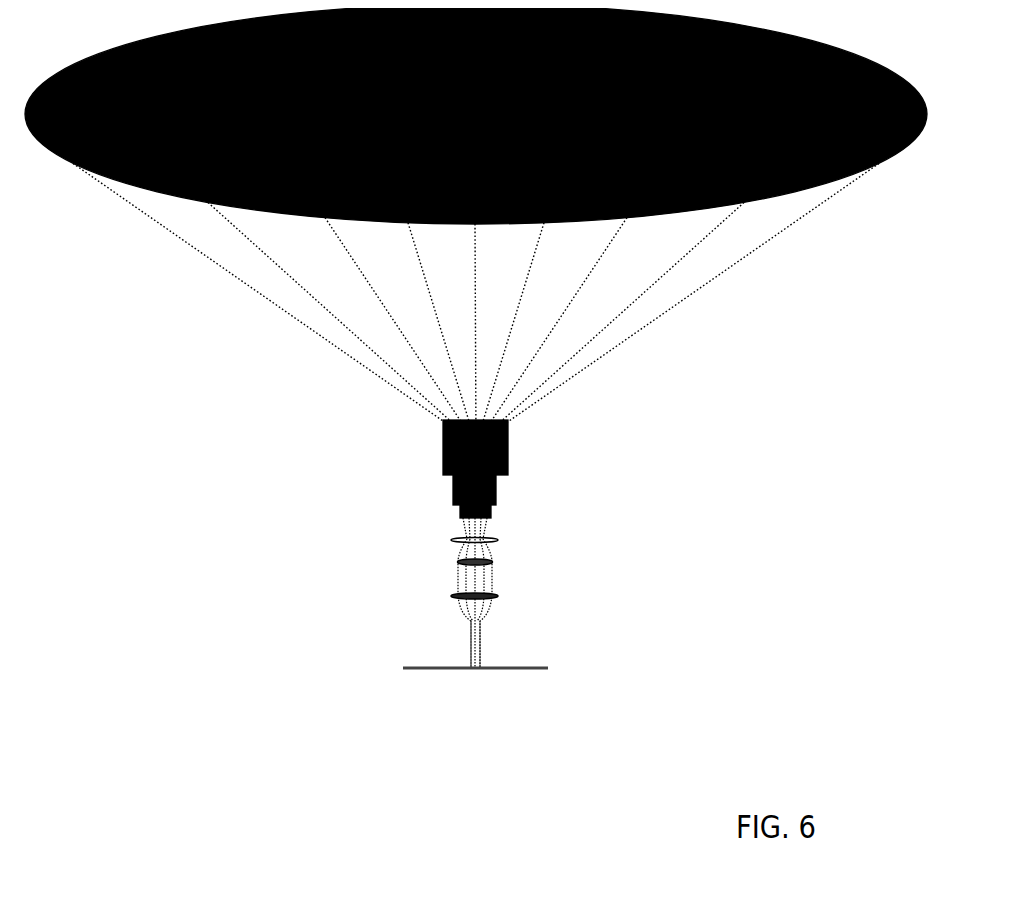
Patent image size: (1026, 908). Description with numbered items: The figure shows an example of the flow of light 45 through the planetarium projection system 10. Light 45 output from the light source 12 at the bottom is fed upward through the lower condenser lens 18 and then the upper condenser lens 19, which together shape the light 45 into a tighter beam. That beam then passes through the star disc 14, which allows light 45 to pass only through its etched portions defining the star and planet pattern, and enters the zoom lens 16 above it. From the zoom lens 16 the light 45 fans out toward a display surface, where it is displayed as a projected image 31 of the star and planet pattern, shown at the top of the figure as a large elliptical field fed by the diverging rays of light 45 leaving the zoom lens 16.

The projection system 10 is at (558, 525).
The light source 12 is at (467, 660).
The star disc 14 is at (486, 530).
The zoom lens 16 is at (500, 447).
The lower condenser lens 18 is at (489, 590).
The upper condenser lens 19 is at (478, 551).
The projected image 31 is at (60, 153).
The light 45 is at (765, 238).